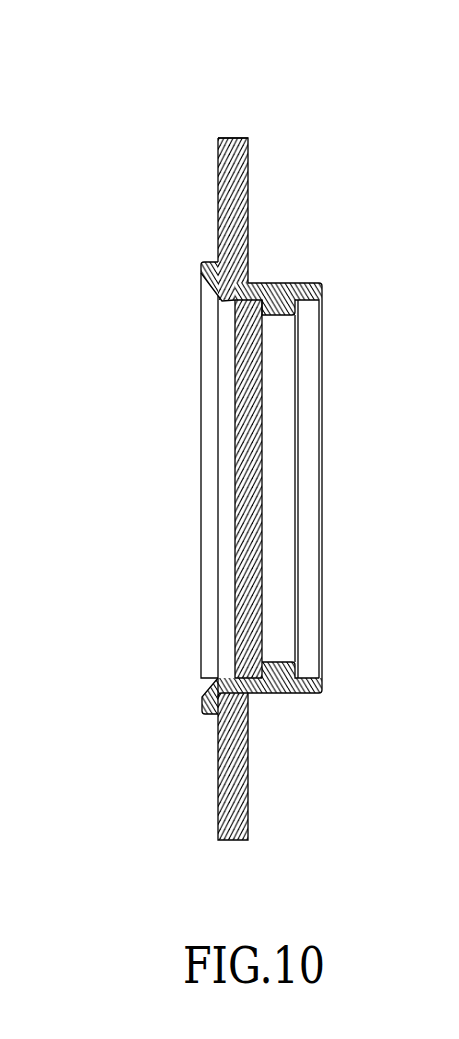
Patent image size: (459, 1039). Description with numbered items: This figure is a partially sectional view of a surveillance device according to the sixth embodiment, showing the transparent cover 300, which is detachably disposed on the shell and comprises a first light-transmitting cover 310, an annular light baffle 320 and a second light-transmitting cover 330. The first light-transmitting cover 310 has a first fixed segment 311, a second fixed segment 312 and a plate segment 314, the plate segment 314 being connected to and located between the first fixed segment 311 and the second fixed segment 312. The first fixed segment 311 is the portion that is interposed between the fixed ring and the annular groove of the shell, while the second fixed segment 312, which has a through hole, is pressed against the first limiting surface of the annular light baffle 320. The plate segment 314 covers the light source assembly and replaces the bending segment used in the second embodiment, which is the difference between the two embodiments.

The transparent cover 300 is at (95, 25).
The first light-transmitting cover 310 is at (235, 125).
The first fixed segment 311 is at (229, 137).
The second fixed segment 312 is at (225, 302).
The plate segment 314 is at (236, 210).
The annular light baffle 320 is at (184, 265).
The second light-transmitting cover 330 is at (247, 349).